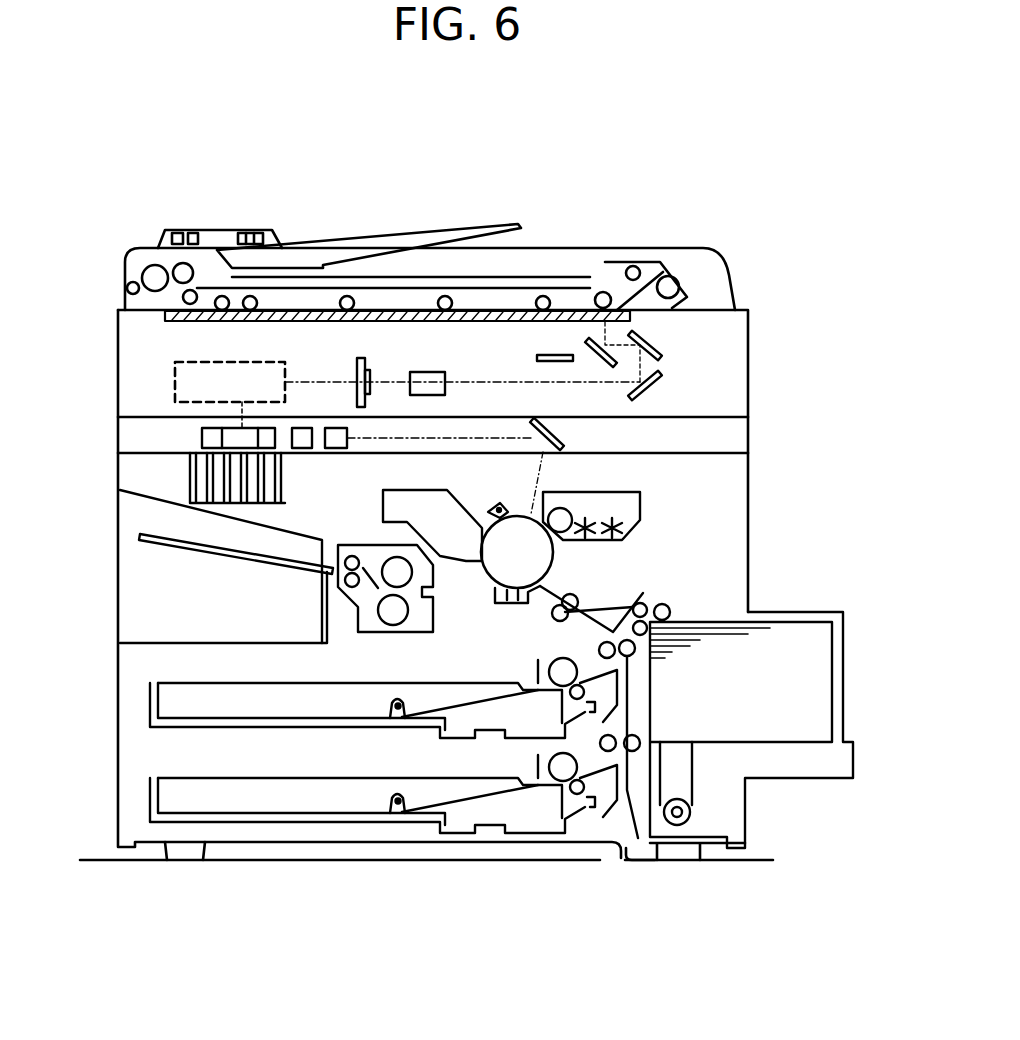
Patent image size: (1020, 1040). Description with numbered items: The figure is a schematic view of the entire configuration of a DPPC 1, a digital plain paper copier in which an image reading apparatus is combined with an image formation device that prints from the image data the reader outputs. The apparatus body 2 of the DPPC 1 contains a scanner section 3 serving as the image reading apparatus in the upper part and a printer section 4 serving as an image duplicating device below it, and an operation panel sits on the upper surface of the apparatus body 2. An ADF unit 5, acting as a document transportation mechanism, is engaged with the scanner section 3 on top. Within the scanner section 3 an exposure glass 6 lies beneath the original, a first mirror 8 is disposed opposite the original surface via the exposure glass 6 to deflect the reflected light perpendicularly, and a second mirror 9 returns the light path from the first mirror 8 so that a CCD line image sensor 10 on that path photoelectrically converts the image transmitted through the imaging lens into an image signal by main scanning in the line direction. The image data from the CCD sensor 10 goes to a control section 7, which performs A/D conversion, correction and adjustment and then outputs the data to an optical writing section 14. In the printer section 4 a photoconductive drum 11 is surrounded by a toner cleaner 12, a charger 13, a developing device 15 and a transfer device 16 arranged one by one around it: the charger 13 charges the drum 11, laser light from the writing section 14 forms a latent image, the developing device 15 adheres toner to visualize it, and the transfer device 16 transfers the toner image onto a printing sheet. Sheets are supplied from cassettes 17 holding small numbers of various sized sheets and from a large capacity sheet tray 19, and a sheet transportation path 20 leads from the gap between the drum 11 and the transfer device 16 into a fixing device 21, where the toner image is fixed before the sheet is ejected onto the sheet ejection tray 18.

The DPPC 1 is at (696, 220).
The apparatus body 2 is at (748, 482).
The scanner section 3 is at (693, 363).
The printer section 4 is at (717, 560).
The ADF unit 5 is at (590, 262).
The exposure glass 6 is at (316, 308).
The control section 7 is at (175, 382).
The first mirror 8 is at (560, 352).
The second mirror 9 is at (690, 350).
The CCD line image sensor 10 is at (358, 365).
The photoconductive drum 11 is at (523, 515).
The toner cleaner 12 is at (383, 507).
The charger 13 is at (497, 507).
The optical writing section 14 is at (704, 438).
The developing device 15 is at (640, 503).
The transfer device 16 is at (517, 600).
The cassettes 17 is at (170, 708).
The sheet ejection tray 18 is at (172, 550).
The large capacity sheet tray 19 is at (835, 683).
The sheet transportation path 20 is at (472, 588).
The fixing device 21 is at (367, 618).